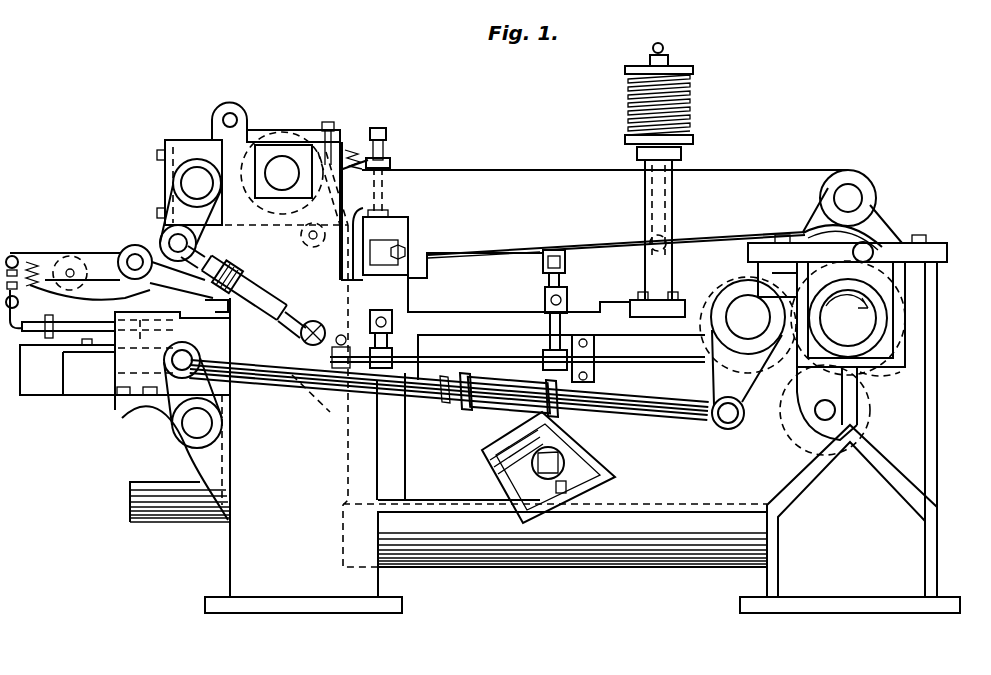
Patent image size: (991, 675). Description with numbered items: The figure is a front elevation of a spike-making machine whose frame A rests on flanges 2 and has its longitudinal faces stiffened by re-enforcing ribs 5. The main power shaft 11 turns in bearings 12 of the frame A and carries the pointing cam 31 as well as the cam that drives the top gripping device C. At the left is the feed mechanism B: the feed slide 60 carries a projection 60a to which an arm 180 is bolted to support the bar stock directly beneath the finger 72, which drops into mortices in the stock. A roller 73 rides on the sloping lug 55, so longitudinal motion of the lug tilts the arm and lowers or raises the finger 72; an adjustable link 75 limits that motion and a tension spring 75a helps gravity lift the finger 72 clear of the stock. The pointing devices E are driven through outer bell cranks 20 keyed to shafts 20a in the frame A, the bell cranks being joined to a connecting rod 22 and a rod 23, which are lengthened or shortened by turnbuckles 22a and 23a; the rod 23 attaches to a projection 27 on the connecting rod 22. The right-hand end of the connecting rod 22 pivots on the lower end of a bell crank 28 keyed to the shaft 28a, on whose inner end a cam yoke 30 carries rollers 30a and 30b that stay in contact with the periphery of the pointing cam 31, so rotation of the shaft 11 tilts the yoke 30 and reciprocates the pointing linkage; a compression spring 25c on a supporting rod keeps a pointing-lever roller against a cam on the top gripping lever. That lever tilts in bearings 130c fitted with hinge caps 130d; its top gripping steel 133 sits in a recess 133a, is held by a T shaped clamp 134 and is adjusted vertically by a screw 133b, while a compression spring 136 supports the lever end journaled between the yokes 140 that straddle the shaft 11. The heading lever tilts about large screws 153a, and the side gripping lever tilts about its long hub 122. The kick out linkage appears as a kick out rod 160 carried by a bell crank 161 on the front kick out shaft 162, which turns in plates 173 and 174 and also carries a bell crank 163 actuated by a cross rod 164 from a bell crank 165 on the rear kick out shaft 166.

The flanges 2 is at (282, 602).
The re-enforcing ribs 5 is at (803, 487).
The main power shaft 11 is at (868, 327).
The bearings 12 is at (890, 358).
The outer bell cranks 20 is at (173, 205).
The shafts 20a is at (190, 178).
The connecting rod 22 is at (440, 390).
The turnbuckle 22a is at (497, 390).
The rod 23 is at (220, 265).
The turnbuckle 23a is at (300, 326).
The compression spring 25c is at (352, 160).
The projection 27 is at (300, 380).
The bell crank 28 is at (712, 375).
The shaft 28a is at (740, 322).
The cam yoke 30 is at (422, 170).
The roller 30a is at (875, 406).
The roller 30b is at (880, 232).
The pointing cam 31 is at (880, 378).
The lug 55 is at (37, 282).
The feed slide 60 is at (33, 363).
The projection 60a is at (89, 373).
The finger 72 is at (240, 280).
The roller 73 is at (110, 292).
The link 75 is at (10, 250).
The tension spring 75a is at (65, 283).
The long hub 122 is at (512, 550).
The bearings 130c is at (293, 165).
The hinge caps 130d is at (300, 106).
The top gripping steel 133 is at (410, 300).
The recess 133a is at (395, 240).
The screw 133b is at (383, 140).
The T shaped clamp 134 is at (420, 272).
The compression spring 136 is at (697, 104).
The yoke 140 is at (883, 212).
The large screws 153a is at (563, 455).
The kick out rod 160 is at (385, 312).
The bell crank 161 is at (405, 340).
The front kick out shaft 162 is at (545, 357).
The bell crank 163 is at (565, 308).
The cross rod 164 is at (565, 290).
The bell crank 165 is at (540, 268).
The rear kick out shaft 166 is at (578, 243).
The plate 173 is at (595, 355).
The plate 174 is at (370, 355).
The arm 180 is at (210, 312).
The frame A is at (243, 552).
The feed mechanism B is at (86, 396).
The top gripping device C is at (485, 185).
The pointing devices E is at (157, 229).